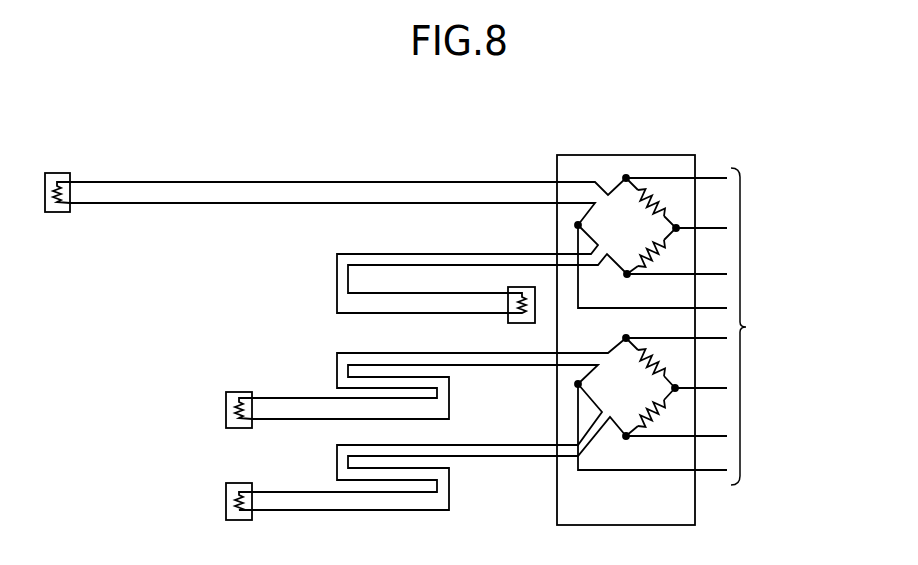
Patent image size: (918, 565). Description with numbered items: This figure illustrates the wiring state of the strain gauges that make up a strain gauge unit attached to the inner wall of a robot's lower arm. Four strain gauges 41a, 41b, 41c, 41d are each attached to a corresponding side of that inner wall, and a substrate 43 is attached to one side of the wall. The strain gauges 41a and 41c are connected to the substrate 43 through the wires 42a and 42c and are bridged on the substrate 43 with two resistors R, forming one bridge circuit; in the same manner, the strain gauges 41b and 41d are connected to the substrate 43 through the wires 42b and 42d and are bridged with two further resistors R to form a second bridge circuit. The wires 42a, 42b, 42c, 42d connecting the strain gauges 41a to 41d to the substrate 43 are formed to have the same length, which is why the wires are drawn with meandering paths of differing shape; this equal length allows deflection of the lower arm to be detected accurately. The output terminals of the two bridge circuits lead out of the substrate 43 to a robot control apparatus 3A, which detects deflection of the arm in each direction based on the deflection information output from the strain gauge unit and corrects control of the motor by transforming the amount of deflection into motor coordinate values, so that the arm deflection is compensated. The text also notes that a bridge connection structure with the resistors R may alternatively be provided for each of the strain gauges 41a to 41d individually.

The substrate 43 is at (636, 155).
The strain gauge 41a is at (57, 173).
The strain gauge 41b is at (240, 392).
The strain gauge 41c is at (510, 288).
The strain gauge 41d is at (240, 483).
The wire 42a is at (224, 181).
The wire 42b is at (283, 398).
The wire 42c is at (337, 280).
The wire 42d is at (283, 492).
The robot control apparatus 3A is at (790, 326).